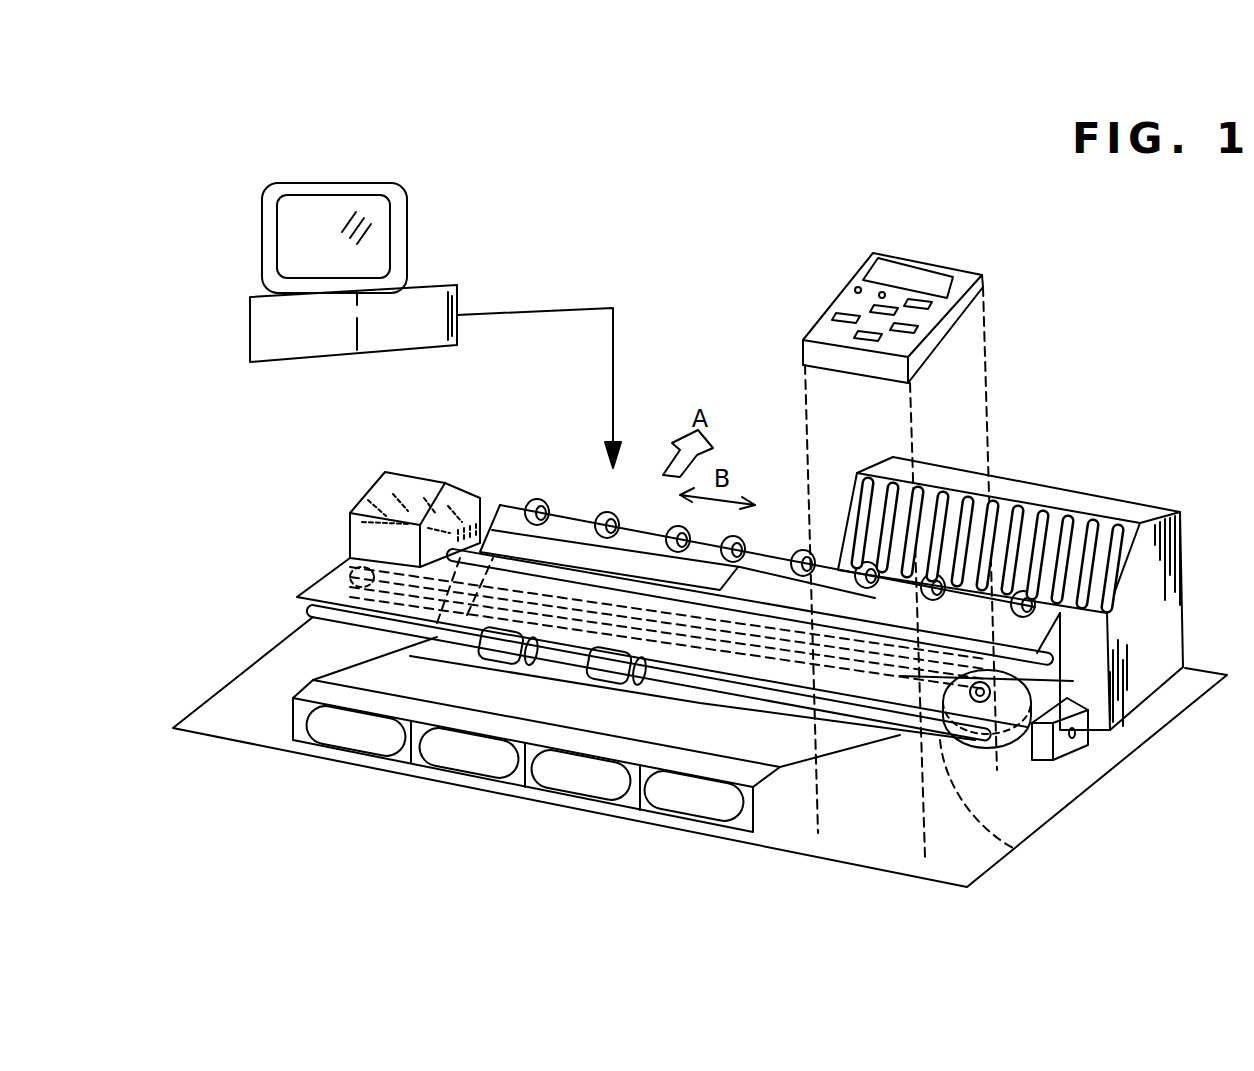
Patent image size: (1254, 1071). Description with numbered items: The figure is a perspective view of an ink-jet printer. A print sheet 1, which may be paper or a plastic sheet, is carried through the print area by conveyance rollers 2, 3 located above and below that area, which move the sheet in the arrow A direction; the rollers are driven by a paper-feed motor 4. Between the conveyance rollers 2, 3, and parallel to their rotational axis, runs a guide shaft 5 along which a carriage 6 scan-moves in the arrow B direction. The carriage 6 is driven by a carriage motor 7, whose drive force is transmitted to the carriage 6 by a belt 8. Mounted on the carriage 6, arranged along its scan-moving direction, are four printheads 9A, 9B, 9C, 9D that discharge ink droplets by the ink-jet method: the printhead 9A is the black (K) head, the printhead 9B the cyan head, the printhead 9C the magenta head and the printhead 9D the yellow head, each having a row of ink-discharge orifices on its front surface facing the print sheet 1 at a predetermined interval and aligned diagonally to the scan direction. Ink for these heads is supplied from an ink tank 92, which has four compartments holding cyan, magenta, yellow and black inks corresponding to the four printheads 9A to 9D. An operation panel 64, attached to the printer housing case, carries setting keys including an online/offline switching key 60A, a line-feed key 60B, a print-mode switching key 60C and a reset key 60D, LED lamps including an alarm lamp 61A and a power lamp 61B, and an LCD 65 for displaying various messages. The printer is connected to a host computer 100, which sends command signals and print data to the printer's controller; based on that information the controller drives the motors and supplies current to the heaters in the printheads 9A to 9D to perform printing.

The print sheet 1 is at (563, 548).
The conveyance roller 2 is at (733, 540).
The conveyance roller 3 is at (630, 688).
The paper-feed motor 4 is at (1075, 742).
The guide shaft 5 is at (1052, 658).
The carriage 6 is at (358, 537).
The carriage motor 7 is at (1013, 737).
The belt 8 is at (1010, 848).
The printhead 9A is at (455, 512).
The printhead 9B is at (433, 503).
The printhead 9C is at (400, 497).
The printhead 9D is at (378, 513).
The online/offline switching key 60A is at (933, 309).
The line-feed key 60B is at (887, 308).
The print-mode switching key 60C is at (897, 326).
The reset key 60D is at (845, 318).
The alarm lamp 61A is at (881, 292).
The power lamp 61B is at (855, 288).
The operation panel 64 is at (973, 289).
The LCD 65 is at (903, 278).
The ink tank 92 is at (667, 800).
The host computer 100 is at (425, 293).